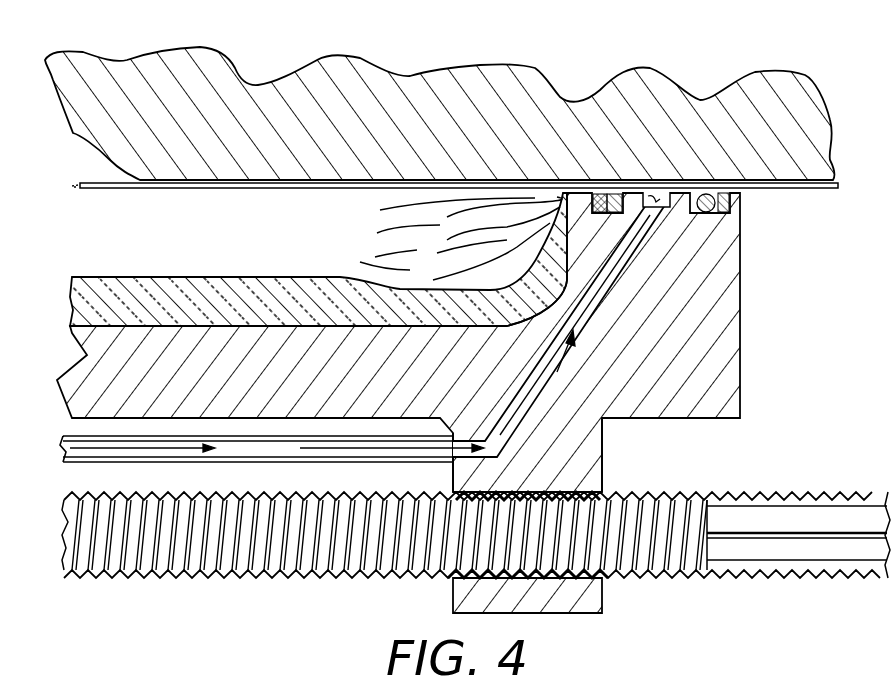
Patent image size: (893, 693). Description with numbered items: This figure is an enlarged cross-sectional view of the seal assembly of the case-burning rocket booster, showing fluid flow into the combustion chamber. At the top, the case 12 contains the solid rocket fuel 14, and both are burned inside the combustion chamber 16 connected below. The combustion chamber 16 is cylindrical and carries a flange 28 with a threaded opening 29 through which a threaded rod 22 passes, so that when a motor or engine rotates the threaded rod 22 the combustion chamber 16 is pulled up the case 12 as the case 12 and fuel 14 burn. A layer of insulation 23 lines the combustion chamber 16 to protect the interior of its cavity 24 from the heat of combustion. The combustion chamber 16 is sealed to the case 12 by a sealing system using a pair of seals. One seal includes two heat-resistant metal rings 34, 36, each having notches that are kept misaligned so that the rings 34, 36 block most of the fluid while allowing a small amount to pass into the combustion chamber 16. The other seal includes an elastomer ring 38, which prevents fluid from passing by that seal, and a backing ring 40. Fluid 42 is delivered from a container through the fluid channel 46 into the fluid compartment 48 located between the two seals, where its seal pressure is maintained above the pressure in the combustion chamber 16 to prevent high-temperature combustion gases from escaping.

The case 12 is at (822, 190).
The solid rocket fuel 14 is at (388, 66).
The combustion chamber 16 is at (741, 337).
The threaded rod 22 is at (208, 577).
The layer of insulation 23 is at (247, 275).
The cavity 24 is at (330, 238).
The flange 28 is at (603, 450).
The threaded opening 29 is at (602, 580).
The heat-resistant metal ring 34 is at (615, 200).
The heat-resistant metal ring 36 is at (600, 193).
The elastomer ring 38 is at (722, 204).
The backing ring 40 is at (733, 200).
The fluid 42 is at (100, 452).
The fluid channel 46 is at (590, 318).
The fluid compartment 48 is at (680, 194).